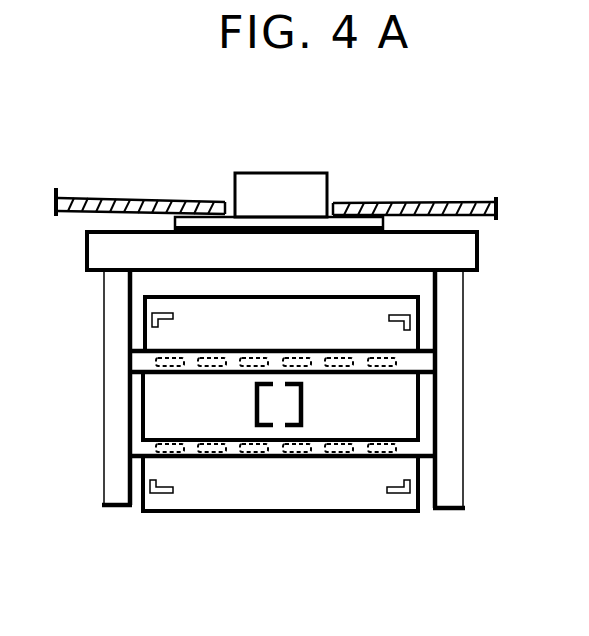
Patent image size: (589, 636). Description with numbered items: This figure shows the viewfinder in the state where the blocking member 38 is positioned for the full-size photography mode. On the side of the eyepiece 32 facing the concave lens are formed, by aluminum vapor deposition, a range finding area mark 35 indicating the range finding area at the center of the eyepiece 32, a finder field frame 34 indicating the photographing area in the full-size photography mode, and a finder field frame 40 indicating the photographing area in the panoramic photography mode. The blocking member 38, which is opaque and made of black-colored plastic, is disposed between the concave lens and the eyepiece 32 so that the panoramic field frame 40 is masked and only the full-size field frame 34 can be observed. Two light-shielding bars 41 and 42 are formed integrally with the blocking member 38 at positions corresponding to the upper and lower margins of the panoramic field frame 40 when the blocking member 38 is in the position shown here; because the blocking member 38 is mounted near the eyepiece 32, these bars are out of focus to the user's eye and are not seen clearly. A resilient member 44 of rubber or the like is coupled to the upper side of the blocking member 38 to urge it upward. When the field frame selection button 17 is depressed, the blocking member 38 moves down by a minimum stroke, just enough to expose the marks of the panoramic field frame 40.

The field frame selection button 17 is at (301, 176).
The resilient member 44 is at (479, 257).
The blocking member 38 is at (98, 314).
The eyepiece 32 is at (257, 524).
The finder field frame 34 is at (412, 321).
The light-shielding bar 41 is at (359, 377).
The light-shielding bar 42 is at (336, 462).
The range finding area mark 35 is at (257, 408).
The finder field frame 40 is at (207, 441).